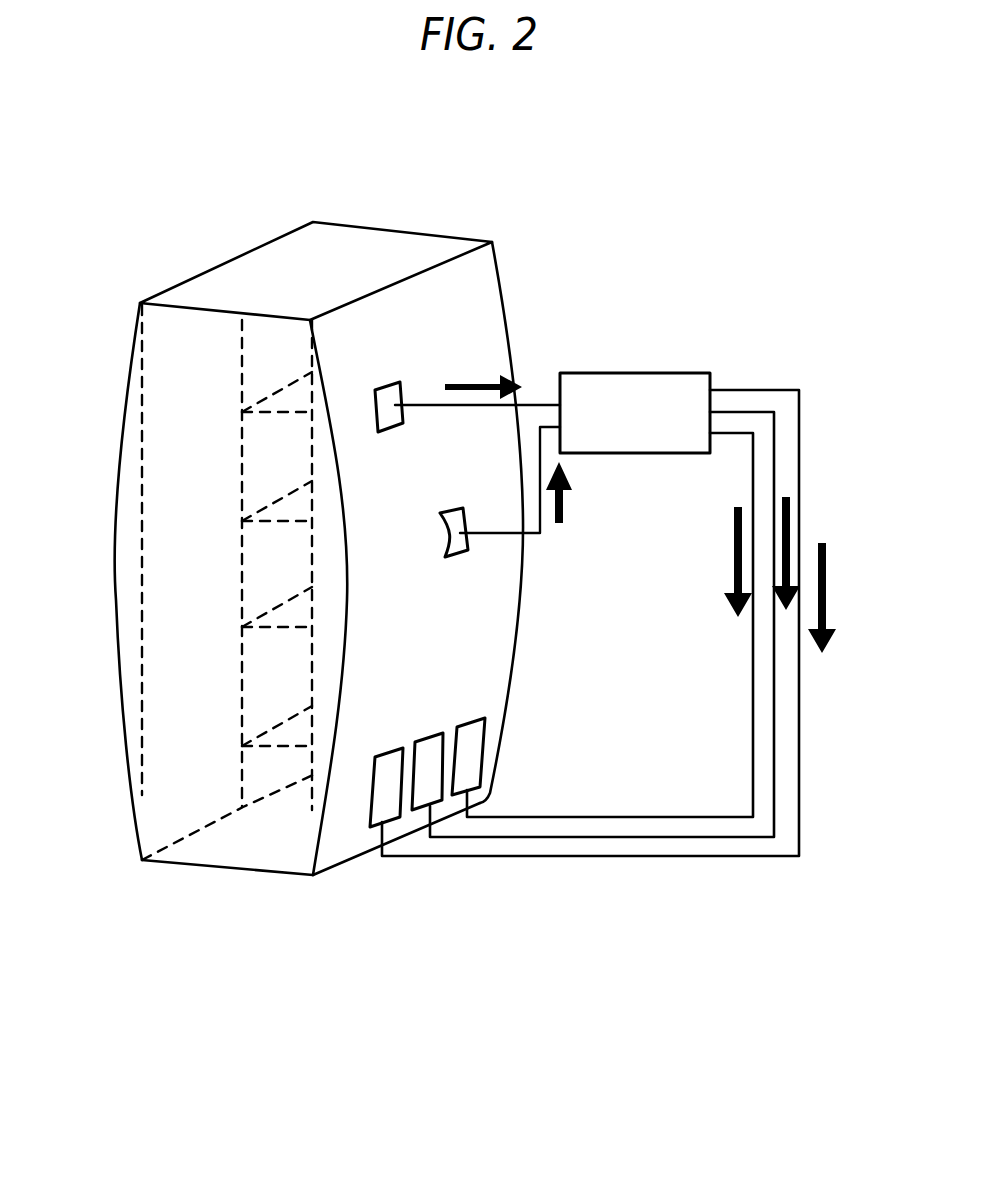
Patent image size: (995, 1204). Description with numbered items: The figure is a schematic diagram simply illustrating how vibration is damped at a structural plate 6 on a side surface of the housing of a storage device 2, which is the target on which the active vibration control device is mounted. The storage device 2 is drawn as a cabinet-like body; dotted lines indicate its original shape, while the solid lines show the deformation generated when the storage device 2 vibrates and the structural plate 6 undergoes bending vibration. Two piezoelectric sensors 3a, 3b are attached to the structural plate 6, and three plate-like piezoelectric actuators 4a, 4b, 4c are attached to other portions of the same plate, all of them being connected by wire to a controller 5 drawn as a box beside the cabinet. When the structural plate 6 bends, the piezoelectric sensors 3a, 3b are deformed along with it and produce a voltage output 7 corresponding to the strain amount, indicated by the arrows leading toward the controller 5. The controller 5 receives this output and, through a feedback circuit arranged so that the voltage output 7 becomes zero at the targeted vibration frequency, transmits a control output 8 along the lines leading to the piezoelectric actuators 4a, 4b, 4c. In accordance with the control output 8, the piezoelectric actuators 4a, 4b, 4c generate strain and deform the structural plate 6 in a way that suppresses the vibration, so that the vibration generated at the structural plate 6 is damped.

The storage device 2 is at (498, 210).
The structural plate 6 is at (433, 290).
The voltage output 7 is at (557, 502).
The controller 5 is at (657, 403).
The control output 8 is at (740, 552).
The piezoelectric sensor 3a is at (392, 432).
The piezoelectric sensor 3b is at (458, 558).
The piezoelectric actuator 4a is at (383, 818).
The piezoelectric actuator 4b is at (425, 805).
The piezoelectric actuator 4c is at (467, 780).